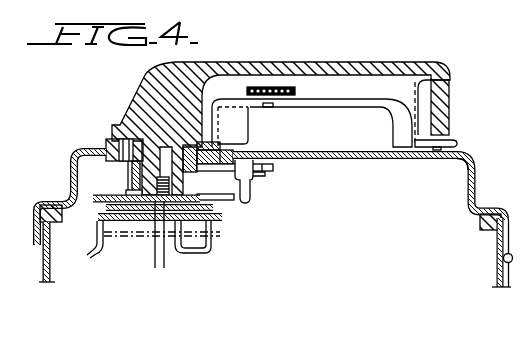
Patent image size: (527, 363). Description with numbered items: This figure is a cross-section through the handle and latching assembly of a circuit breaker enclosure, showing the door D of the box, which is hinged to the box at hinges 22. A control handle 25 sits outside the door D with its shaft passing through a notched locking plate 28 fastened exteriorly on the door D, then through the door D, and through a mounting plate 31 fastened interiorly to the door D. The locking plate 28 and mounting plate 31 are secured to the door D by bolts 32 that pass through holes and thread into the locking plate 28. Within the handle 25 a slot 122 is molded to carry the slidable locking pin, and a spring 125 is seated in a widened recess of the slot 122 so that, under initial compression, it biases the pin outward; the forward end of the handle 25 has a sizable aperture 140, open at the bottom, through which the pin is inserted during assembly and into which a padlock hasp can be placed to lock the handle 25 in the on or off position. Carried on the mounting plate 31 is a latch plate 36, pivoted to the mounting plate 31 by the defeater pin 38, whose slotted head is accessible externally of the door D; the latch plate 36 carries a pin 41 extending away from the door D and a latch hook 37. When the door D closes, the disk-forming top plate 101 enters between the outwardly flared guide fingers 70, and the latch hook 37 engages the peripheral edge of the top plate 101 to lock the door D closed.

The control handle 25 is at (297, 63).
The spring 125 is at (272, 87).
The slot 122 is at (334, 105).
The aperture 140 is at (437, 108).
The notched locking plate 28 is at (106, 146).
The mounting plate 31 is at (107, 157).
The bolts 32 is at (125, 171).
The defeater pin 38 is at (216, 151).
The latch plate 36 is at (276, 168).
The pin 41 is at (255, 177).
The door D is at (464, 156).
The hinges 22 is at (507, 265).
The guide fingers 70 is at (97, 232).
The top plate 101 is at (142, 240).
The latch hook 37 is at (152, 265).